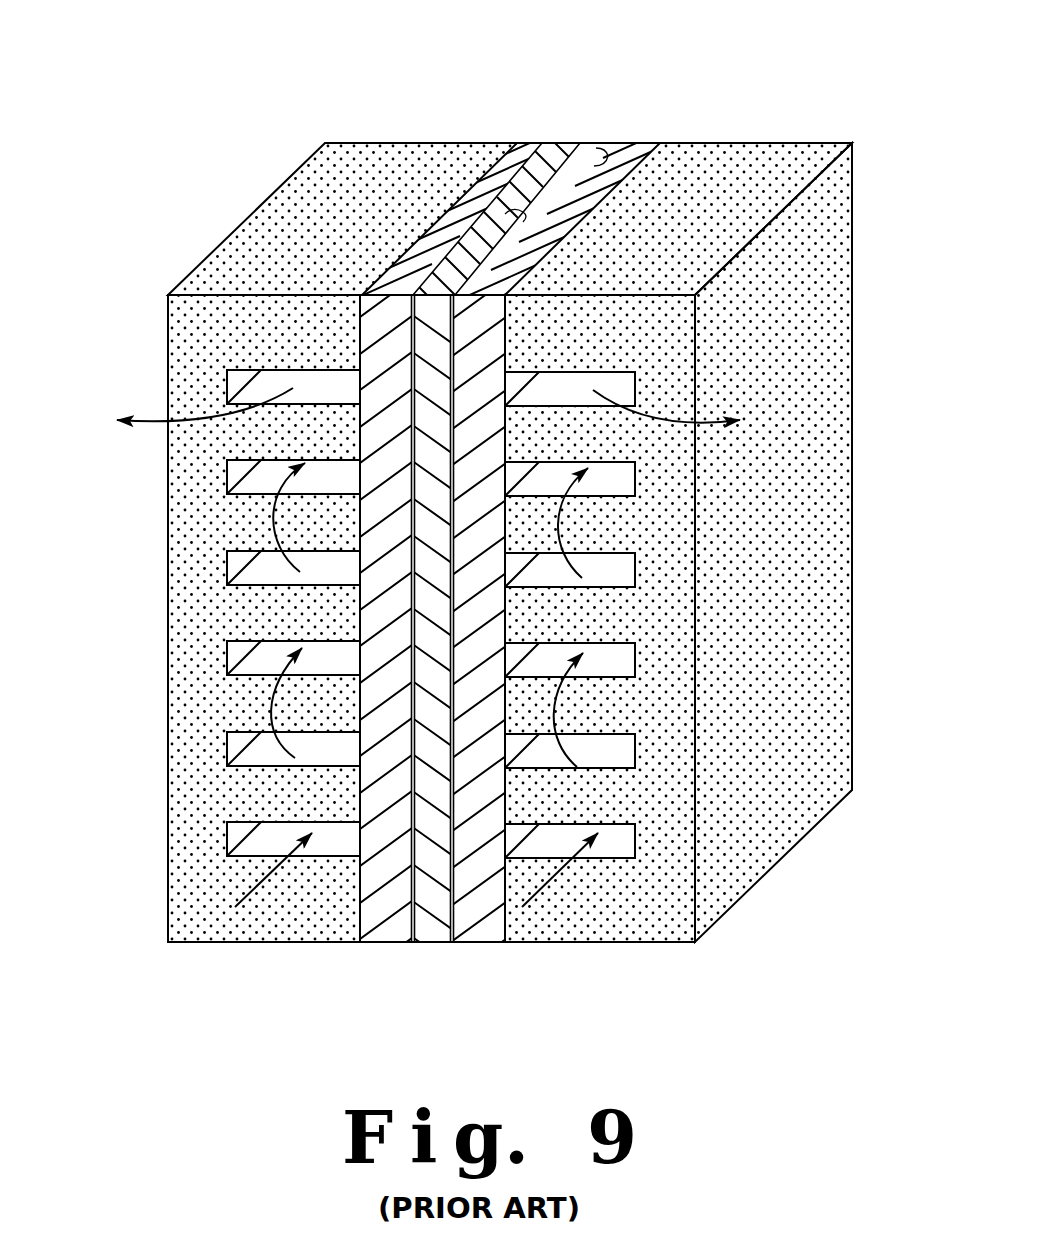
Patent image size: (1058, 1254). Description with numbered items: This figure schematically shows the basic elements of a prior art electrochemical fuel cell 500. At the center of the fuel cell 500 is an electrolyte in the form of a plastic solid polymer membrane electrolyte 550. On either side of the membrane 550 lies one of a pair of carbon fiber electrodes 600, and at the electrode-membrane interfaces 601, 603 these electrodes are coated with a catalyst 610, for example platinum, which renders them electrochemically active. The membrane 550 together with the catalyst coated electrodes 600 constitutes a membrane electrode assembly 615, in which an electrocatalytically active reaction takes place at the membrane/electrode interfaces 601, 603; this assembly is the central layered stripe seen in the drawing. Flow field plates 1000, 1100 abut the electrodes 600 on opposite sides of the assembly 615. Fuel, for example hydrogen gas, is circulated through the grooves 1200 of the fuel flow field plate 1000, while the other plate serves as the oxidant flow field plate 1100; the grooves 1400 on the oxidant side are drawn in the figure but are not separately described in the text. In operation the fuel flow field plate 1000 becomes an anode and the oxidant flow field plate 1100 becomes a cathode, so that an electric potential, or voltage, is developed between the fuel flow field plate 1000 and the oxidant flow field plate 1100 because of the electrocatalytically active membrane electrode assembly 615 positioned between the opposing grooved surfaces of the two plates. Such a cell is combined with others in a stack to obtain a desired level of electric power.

The fuel cell 500 is at (543, 497).
The solid polymer membrane electrolyte 550 is at (552, 157).
The carbon fiber electrodes 600 is at (525, 142).
The electrode-membrane interface 601 is at (536, 143).
The electrode-membrane interface 603 is at (618, 143).
The catalyst 610 is at (512, 229).
The membrane electrode assembly 615 is at (540, 523).
The fuel flow field plate 1000 is at (825, 340).
The oxidant flow field plate 1100 is at (265, 200).
The grooves 1200 is at (613, 755).
The left flow channels 1400 is at (263, 847).